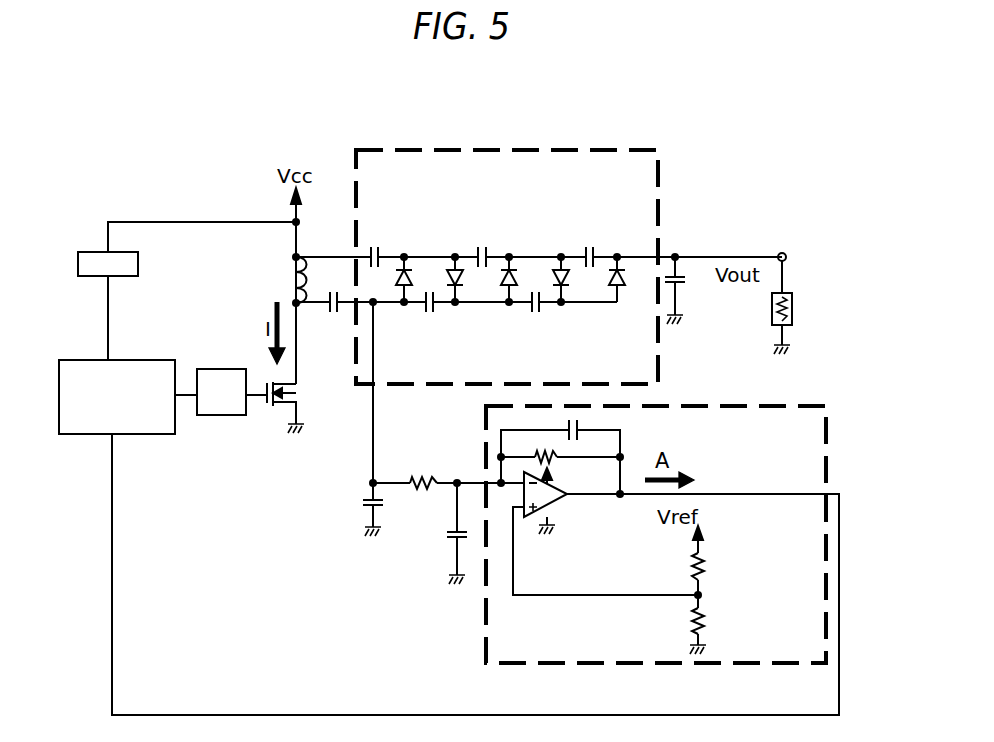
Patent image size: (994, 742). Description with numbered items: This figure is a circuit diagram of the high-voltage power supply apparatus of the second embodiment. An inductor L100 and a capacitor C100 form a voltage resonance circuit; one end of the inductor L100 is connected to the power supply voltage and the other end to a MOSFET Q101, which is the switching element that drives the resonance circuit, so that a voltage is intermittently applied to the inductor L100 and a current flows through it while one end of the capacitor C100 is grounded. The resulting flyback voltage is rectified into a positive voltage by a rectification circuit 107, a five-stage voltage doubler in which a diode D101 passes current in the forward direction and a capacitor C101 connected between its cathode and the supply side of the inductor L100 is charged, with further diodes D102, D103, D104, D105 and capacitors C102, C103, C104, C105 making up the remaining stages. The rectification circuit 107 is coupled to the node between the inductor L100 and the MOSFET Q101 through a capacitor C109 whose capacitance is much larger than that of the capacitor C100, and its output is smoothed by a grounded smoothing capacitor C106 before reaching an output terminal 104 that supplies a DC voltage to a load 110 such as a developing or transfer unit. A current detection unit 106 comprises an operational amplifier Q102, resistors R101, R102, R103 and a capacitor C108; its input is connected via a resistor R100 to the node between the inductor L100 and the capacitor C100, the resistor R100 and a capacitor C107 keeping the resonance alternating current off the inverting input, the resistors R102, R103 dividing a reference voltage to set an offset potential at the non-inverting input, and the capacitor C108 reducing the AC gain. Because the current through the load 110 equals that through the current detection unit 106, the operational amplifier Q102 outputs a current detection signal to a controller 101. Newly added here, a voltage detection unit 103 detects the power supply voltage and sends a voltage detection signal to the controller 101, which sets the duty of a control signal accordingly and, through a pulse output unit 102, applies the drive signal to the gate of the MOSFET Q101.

The controller 101 is at (138, 360).
The pulse output unit 102 is at (213, 369).
The voltage detection unit 103 is at (78, 266).
The output terminal 104 is at (782, 252).
The current detection unit 106 is at (547, 664).
The rectification circuit 107 is at (660, 358).
The load 110 is at (773, 305).
The inductor L100 is at (294, 274).
The MOSFET Q101 is at (270, 402).
The operational amplifier Q102 is at (527, 520).
The capacitor C100 is at (367, 502).
The capacitor C101 is at (373, 243).
The capacitor C102 is at (429, 312).
The capacitor C103 is at (482, 243).
The capacitor C104 is at (535, 312).
The capacitor C105 is at (590, 243).
The smoothing capacitor C106 is at (690, 279).
The capacitor C107 is at (449, 533).
The capacitor C108 is at (582, 422).
The capacitor C109 is at (333, 318).
The diode D101 is at (392, 304).
The diode D102 is at (453, 272).
The diode D103 is at (506, 290).
The diode D104 is at (560, 272).
The diode D105 is at (614, 290).
The resistor R100 is at (426, 478).
The resistor R101 is at (546, 448).
The resistor R102 is at (712, 562).
The resistor R103 is at (712, 614).